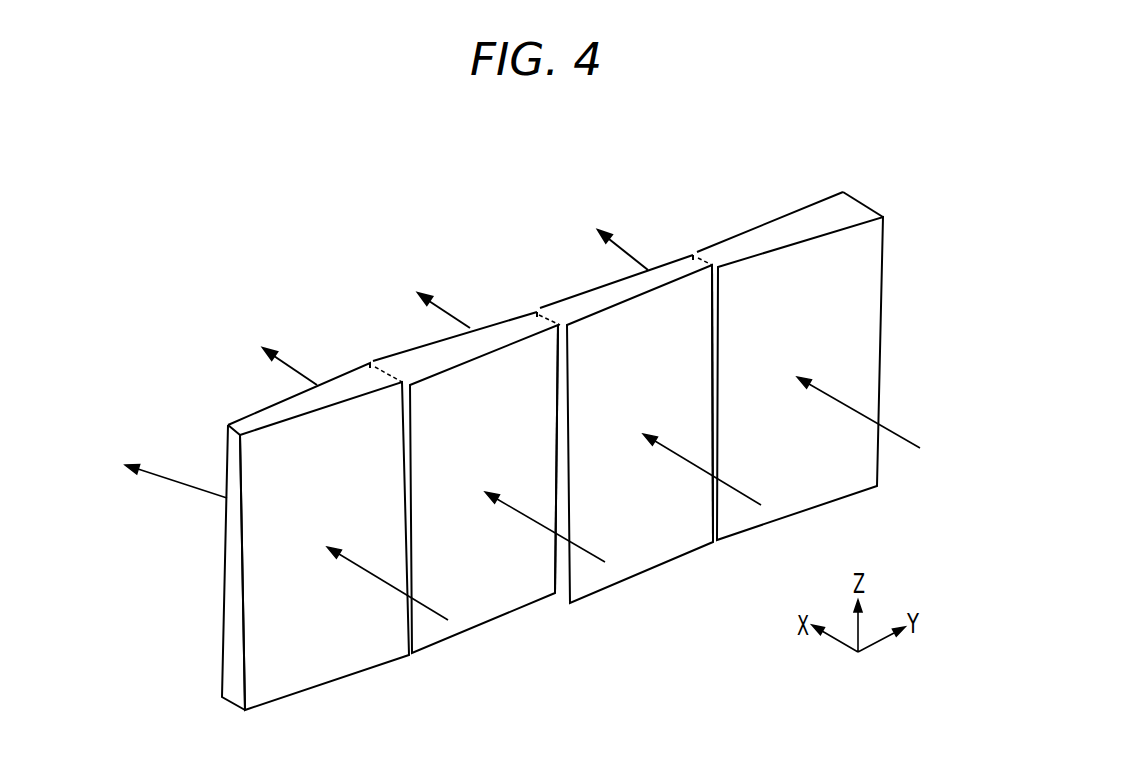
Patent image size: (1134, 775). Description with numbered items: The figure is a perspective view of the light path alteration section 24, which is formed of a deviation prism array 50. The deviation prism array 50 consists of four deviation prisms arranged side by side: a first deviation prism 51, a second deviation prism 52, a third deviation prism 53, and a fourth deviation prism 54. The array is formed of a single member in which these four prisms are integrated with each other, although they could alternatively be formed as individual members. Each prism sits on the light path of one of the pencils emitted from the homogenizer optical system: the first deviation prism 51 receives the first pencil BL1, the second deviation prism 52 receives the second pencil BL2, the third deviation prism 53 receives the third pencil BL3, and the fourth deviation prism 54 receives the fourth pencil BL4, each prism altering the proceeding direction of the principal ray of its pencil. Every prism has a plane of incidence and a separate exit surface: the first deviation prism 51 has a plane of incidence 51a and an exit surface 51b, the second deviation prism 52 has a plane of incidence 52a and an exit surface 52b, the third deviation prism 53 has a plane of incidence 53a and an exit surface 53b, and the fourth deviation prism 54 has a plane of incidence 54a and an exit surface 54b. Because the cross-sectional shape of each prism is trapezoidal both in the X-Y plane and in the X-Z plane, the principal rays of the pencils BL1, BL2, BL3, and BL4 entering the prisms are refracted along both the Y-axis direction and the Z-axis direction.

The light path alteration section 24 is at (540, 412).
The deviation prism array 50 is at (453, 263).
The first deviation prism 51 is at (791, 328).
The plane of incidence 51a is at (830, 250).
The exit surface 51b is at (732, 235).
The second deviation prism 52 is at (685, 393).
The plane of incidence 52a is at (673, 307).
The exit surface 52b is at (562, 302).
The third deviation prism 53 is at (524, 447).
The plane of incidence 53a is at (515, 365).
The exit surface 53b is at (387, 355).
The fourth deviation prism 54 is at (367, 505).
The plane of incidence 54a is at (342, 420).
The exit surface 54b is at (233, 415).
The first pencil BL1 is at (920, 448).
The second pencil BL2 is at (740, 497).
The third pencil BL3 is at (587, 557).
The fourth pencil BL4 is at (430, 610).